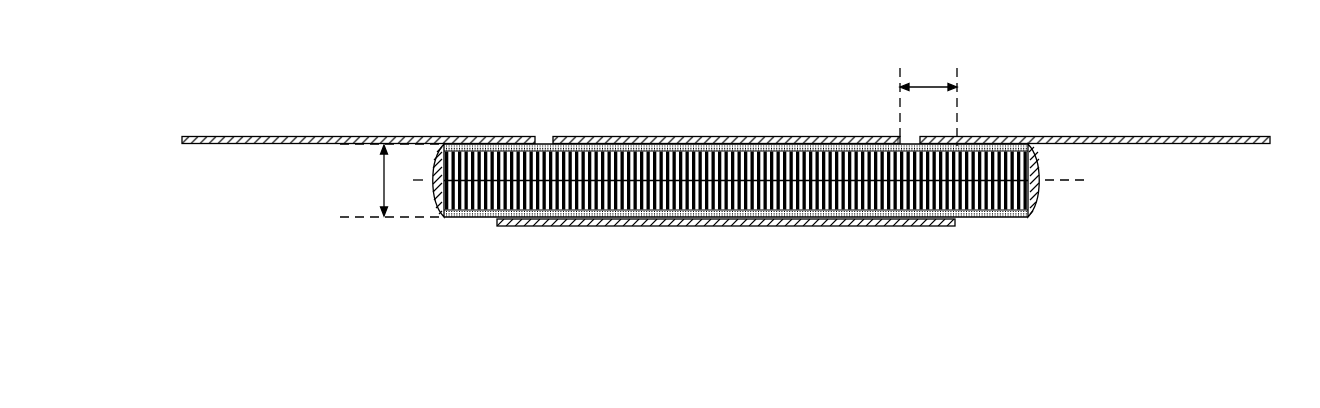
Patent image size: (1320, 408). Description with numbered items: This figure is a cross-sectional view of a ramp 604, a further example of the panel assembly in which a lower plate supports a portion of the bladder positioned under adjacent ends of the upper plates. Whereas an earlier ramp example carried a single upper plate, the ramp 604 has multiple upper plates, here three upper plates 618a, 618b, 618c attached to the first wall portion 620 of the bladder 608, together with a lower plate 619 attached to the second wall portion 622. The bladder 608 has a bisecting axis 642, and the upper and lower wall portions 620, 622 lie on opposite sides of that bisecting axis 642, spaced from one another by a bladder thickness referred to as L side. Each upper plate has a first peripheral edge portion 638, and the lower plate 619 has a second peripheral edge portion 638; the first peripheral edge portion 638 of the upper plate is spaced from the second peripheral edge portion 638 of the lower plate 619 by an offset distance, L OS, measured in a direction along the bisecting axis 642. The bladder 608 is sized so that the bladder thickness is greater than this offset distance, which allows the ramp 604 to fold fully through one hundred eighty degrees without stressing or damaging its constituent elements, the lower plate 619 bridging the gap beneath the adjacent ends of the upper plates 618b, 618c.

The ramp 604 is at (200, 60).
The bladder 608 is at (693, 188).
The upper plate 618a is at (235, 145).
The upper plate 618b is at (695, 136).
The upper plate 618c is at (1215, 145).
The lower plate 619 is at (558, 228).
The first wall portion 620 is at (805, 145).
The second wall portion 622 is at (858, 227).
The peripheral edge portion 638 is at (896, 137).
The bisecting axis 642 is at (1061, 183).